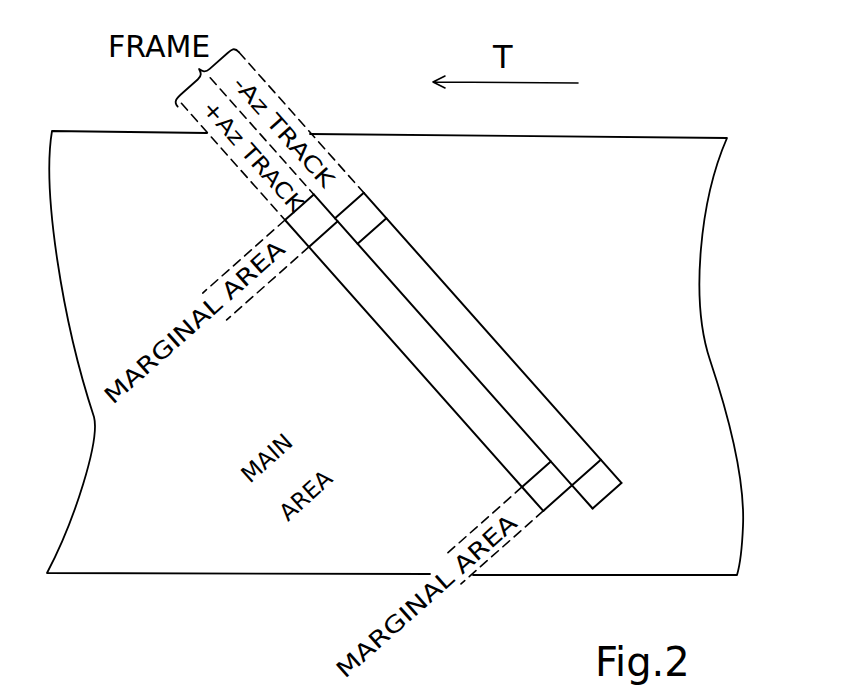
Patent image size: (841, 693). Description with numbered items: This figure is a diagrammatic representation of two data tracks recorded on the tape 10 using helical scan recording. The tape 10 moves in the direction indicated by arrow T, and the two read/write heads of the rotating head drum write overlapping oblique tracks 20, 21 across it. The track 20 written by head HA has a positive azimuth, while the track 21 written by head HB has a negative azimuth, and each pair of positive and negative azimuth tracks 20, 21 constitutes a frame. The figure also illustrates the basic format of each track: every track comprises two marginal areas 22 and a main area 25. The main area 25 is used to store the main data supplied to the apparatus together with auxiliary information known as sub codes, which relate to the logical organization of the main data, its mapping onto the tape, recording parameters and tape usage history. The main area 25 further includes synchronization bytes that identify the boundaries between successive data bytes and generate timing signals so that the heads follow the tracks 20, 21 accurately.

The tape 10 is at (652, 136).
The positive azimuth track 20 is at (420, 315).
The negative azimuth track 21 is at (502, 348).
The marginal areas 22 is at (287, 222).
The main area 25 is at (440, 382).